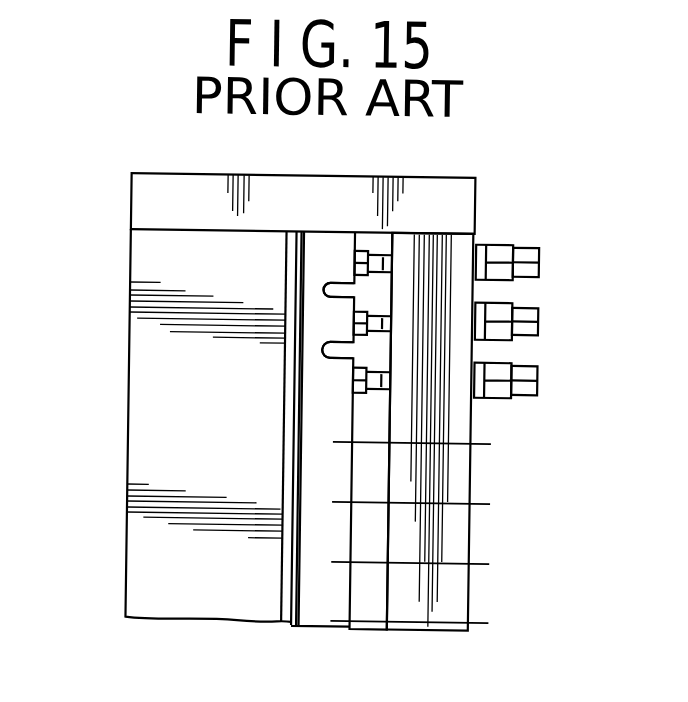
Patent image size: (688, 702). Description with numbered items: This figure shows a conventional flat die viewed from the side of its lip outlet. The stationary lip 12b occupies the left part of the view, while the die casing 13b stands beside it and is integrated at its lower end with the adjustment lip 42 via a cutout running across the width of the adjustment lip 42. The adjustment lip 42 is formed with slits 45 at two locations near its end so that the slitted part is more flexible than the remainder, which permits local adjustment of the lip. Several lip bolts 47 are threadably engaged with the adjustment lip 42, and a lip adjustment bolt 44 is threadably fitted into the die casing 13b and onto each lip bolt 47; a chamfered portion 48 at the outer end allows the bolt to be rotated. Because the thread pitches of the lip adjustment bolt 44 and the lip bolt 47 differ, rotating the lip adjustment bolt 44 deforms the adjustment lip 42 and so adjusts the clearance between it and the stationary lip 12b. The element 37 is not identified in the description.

The top frame bar 37 is at (157, 194).
The stationary lip 12b is at (146, 354).
The adjustment lip 42 is at (340, 242).
The slits 45 is at (331, 286).
The lip bolt 47 is at (378, 252).
The die casing 13b is at (458, 430).
The lip adjustment bolt 44 is at (503, 250).
The chamfered portion 48 is at (530, 248).